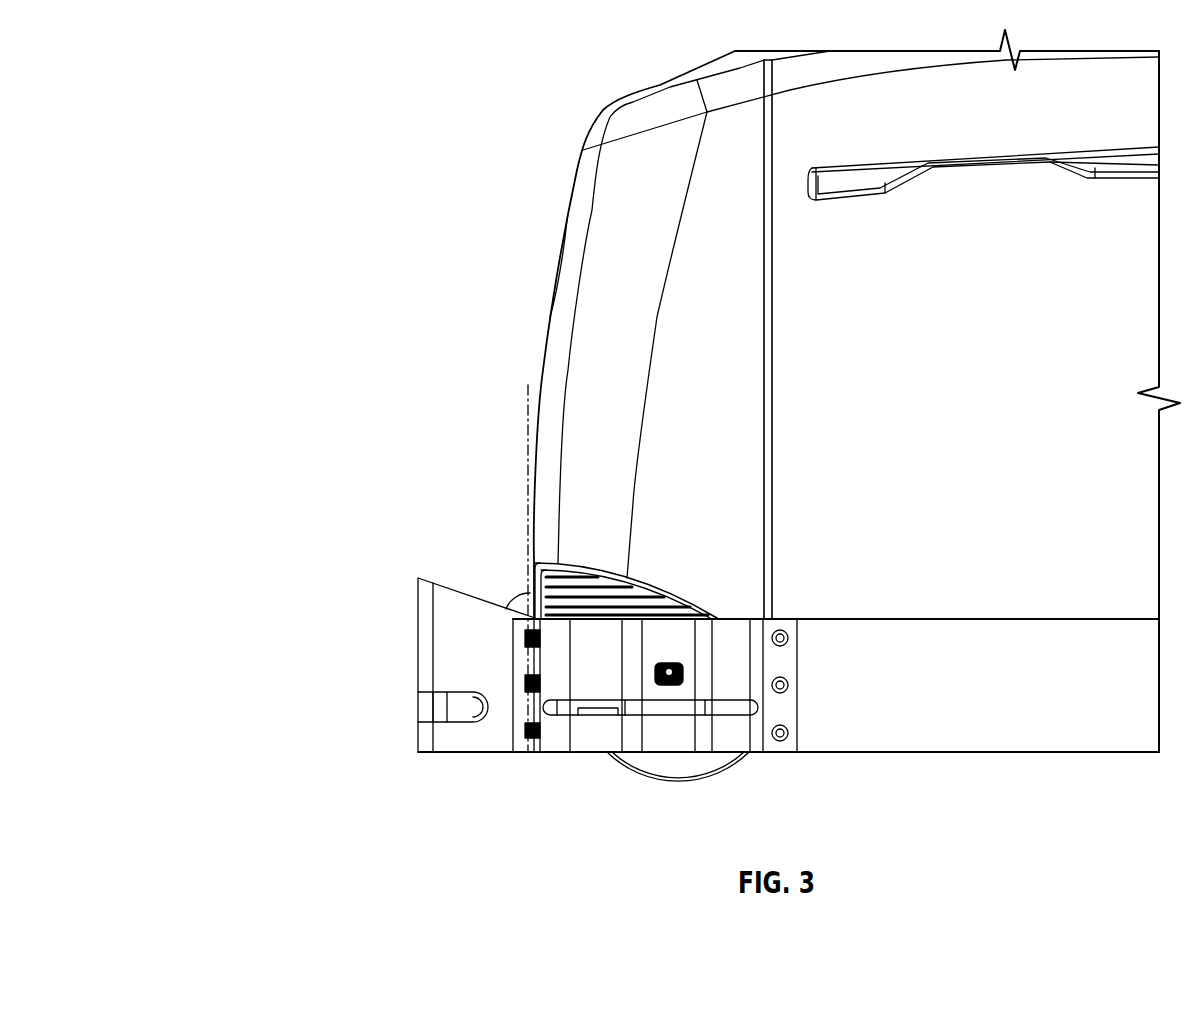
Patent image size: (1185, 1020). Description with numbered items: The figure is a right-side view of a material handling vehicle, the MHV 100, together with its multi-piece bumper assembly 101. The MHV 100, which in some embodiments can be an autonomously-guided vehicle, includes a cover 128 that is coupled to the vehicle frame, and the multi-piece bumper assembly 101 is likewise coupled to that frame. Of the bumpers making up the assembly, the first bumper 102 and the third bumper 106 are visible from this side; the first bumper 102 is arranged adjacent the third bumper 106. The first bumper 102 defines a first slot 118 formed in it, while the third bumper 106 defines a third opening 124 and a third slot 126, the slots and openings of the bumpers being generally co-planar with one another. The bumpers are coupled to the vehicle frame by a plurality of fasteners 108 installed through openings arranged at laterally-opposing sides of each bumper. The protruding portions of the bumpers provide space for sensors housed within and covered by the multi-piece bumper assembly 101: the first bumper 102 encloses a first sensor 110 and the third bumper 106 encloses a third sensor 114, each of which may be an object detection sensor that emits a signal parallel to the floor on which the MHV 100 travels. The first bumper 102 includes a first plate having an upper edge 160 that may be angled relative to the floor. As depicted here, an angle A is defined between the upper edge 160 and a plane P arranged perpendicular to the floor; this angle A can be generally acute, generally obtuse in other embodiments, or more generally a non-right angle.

The MHV 100 is at (718, 90).
The multi-piece bumper assembly 101 is at (312, 530).
The first bumper 102 is at (430, 617).
The third bumper 106 is at (743, 737).
The fasteners 108 is at (527, 740).
The first sensor 110 is at (465, 713).
The third sensor 114 is at (673, 708).
The first slot 118 is at (427, 715).
The third opening 124 is at (667, 685).
The third slot 126 is at (577, 710).
The cover 128 is at (577, 213).
The upper edge 160 is at (457, 588).
The angle A is at (518, 600).
The plane P is at (525, 425).